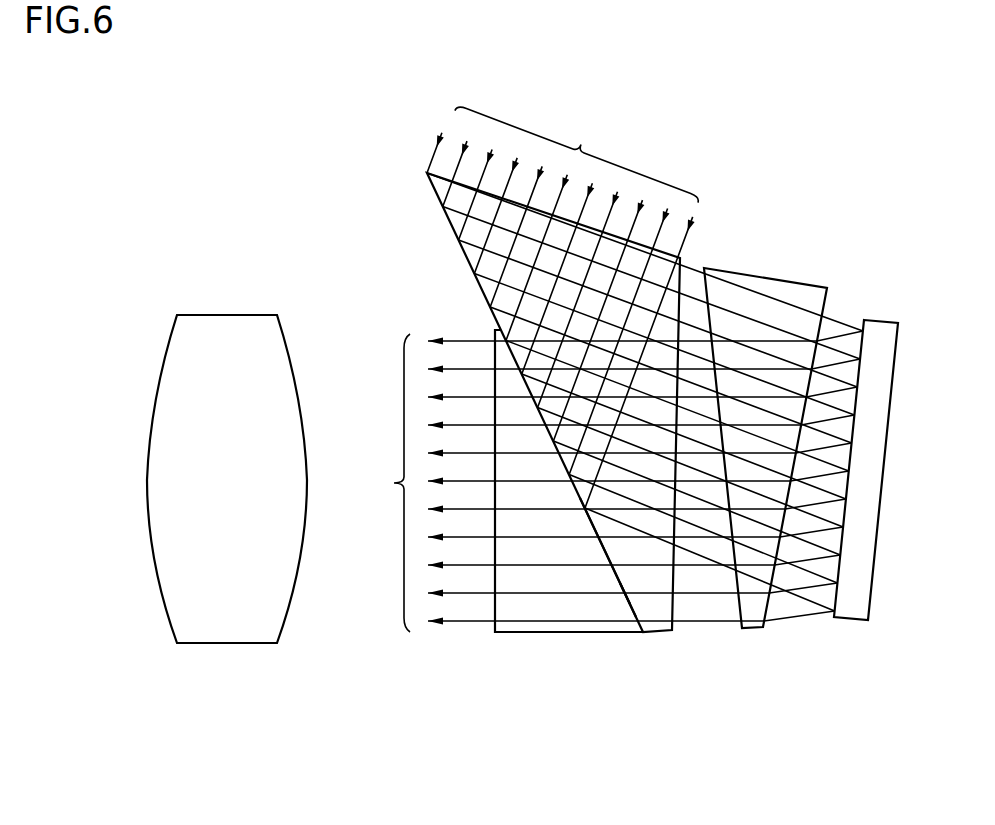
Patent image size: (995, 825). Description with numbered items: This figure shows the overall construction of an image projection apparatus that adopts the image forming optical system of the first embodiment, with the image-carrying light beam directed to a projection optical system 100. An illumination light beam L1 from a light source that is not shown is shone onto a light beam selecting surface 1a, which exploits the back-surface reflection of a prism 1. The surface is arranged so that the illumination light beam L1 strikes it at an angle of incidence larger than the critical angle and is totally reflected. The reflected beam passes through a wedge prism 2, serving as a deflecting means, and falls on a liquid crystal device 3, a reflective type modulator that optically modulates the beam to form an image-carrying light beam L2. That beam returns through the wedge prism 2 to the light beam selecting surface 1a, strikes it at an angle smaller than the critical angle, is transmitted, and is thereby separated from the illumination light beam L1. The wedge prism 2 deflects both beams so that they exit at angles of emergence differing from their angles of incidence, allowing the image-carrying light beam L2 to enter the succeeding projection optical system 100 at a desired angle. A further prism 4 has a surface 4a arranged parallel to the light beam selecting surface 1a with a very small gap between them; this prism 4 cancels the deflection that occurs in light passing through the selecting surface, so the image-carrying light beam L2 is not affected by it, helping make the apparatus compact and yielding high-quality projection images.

The projection optical system 100 is at (218, 630).
The prism 1 is at (672, 622).
The light beam selecting surface 1a is at (635, 607).
The prism 4 is at (522, 613).
The surface 4a is at (628, 602).
The wedge prism 2 is at (788, 290).
The liquid crystal device 3 is at (882, 330).
The illumination light beam L1 is at (562, 302).
The image-carrying light beam L2 is at (597, 481).